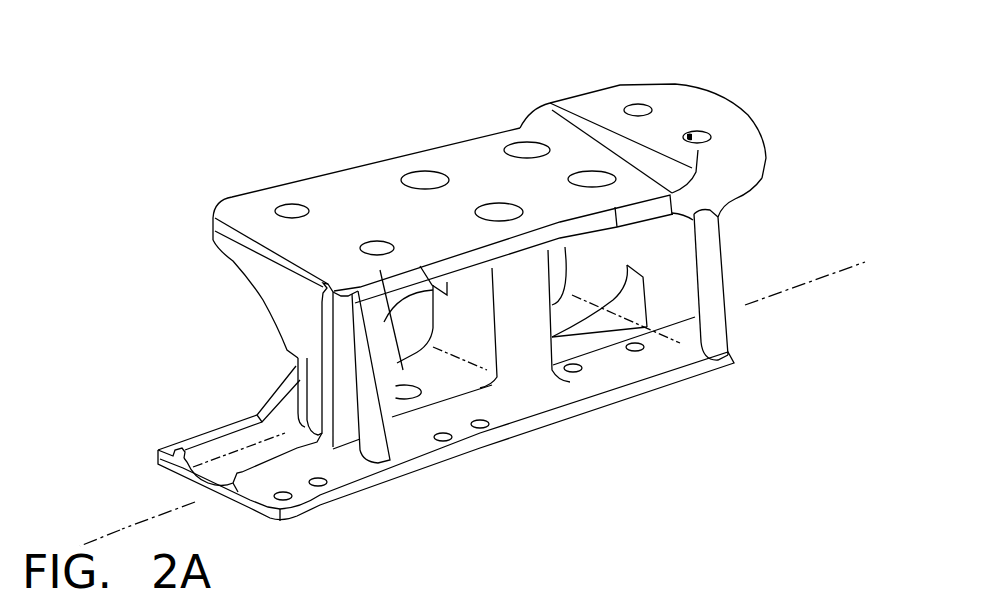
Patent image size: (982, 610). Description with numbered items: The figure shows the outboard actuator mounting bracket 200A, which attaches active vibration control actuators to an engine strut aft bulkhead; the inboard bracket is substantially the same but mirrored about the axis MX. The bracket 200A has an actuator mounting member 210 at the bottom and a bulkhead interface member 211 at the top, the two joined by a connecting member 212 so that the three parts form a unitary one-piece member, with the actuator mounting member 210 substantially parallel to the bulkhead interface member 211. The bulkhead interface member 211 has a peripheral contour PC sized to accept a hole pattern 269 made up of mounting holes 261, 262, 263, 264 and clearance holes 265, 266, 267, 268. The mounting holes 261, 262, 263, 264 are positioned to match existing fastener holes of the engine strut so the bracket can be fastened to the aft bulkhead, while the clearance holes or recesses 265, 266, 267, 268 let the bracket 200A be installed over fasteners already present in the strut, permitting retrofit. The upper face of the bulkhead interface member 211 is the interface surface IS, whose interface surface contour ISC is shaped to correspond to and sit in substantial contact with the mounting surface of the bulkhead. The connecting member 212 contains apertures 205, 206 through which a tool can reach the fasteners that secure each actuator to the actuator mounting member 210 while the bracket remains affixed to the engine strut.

The bracket 200A is at (173, 56).
The hole pattern 269 is at (298, 122).
The bulkhead interface member 211 is at (365, 197).
The mounting hole 261 is at (287, 205).
The mounting hole 262 is at (363, 255).
The clearance hole 265 is at (422, 168).
The clearance hole 266 is at (495, 198).
The clearance hole 267 is at (526, 138).
The clearance hole 268 is at (590, 168).
The mounting hole 263 is at (637, 103).
The mounting hole 264 is at (698, 131).
The interface surface IS is at (233, 212).
The interface surface contour ISC is at (598, 100).
The peripheral contour PC is at (733, 177).
The axis MX is at (767, 300).
The connecting member 212 is at (403, 365).
The aperture 205 is at (463, 388).
The aperture 206 is at (588, 322).
The actuator mounting member 210 is at (332, 498).